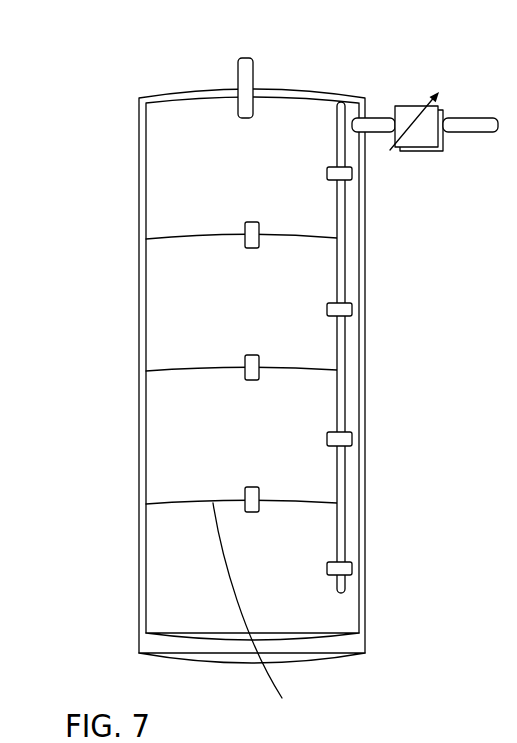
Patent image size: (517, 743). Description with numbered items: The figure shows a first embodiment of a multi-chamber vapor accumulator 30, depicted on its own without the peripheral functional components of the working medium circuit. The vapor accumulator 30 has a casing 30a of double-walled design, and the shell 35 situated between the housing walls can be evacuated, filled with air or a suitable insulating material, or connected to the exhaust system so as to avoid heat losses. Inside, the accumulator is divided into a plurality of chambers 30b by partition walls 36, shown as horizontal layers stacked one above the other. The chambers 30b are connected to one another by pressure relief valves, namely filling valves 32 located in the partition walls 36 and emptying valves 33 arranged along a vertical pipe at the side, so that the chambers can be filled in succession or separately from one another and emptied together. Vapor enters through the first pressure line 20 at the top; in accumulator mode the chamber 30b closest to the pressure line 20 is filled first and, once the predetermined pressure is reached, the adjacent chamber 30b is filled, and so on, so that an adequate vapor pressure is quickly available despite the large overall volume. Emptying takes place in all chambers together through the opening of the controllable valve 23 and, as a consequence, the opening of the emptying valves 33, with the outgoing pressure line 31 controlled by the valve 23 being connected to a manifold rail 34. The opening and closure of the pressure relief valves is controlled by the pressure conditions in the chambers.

The first pressure line 20 is at (237, 72).
The controllable valve 23 is at (408, 112).
The vapor accumulator 30 is at (116, 87).
The casing 30a is at (158, 653).
The chambers 30b is at (185, 287).
The outgoing pressure line 31 is at (470, 120).
The filling valves 32 is at (246, 490).
The emptying valves 33 is at (352, 564).
The manifold rail 34 is at (353, 565).
The shell 35 is at (347, 640).
The partition walls 36 is at (254, 618).